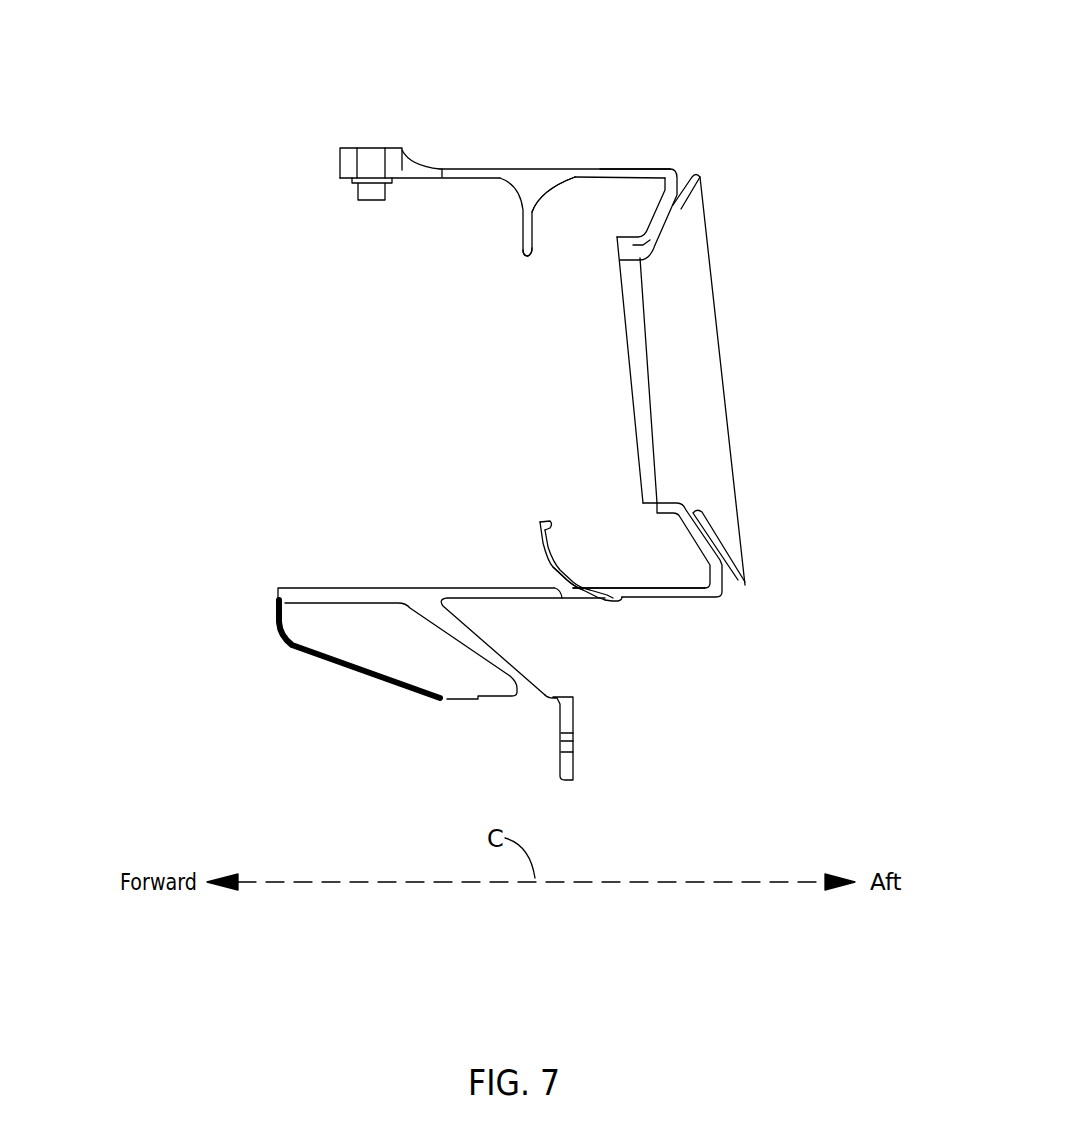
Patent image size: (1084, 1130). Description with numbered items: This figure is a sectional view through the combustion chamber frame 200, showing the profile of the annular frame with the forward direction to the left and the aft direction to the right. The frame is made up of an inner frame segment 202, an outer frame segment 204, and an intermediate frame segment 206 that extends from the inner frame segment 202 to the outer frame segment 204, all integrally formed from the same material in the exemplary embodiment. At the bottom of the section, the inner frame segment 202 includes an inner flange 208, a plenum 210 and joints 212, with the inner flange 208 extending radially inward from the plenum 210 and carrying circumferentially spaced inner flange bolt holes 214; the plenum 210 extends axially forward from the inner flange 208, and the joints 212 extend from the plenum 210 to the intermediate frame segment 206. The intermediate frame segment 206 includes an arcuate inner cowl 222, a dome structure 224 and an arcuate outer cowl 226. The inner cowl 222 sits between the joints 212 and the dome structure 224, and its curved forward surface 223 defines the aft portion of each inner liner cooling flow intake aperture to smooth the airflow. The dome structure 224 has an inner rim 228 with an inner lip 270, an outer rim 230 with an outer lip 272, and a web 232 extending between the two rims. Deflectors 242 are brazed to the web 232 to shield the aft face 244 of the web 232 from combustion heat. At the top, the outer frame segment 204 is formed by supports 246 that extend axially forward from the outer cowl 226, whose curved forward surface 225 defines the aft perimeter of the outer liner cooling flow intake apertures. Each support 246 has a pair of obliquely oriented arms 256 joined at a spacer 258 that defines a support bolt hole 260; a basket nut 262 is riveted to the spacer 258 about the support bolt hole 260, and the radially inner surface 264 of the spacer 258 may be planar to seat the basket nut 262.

The combustion chamber frame 200 is at (283, 53).
The inner frame segment 202 is at (262, 690).
The outer frame segment 204 is at (290, 163).
The intermediate frame segment 206 is at (498, 380).
The inner flange 208 is at (578, 705).
The plenum 210 is at (365, 680).
The joints 212 is at (497, 587).
The inner flange bolt holes 214 is at (580, 752).
The arcuate inner cowl 222 is at (537, 518).
The curved forward surface 223 is at (566, 600).
The dome structure 224 is at (640, 218).
The curved forward surface 225 is at (570, 167).
The arcuate outer cowl 226 is at (528, 258).
The inner rim 228 is at (680, 598).
The outer rim 230 is at (630, 168).
The web 232 is at (664, 203).
The deflectors 242 is at (708, 372).
The aft face 244 is at (700, 212).
The supports 246 is at (448, 161).
The arms 256 is at (486, 177).
The spacer 258 is at (352, 156).
The support bolt hole 260 is at (372, 157).
The basket nut 262 is at (350, 194).
The radially inner surface 264 is at (398, 180).
The inner lip 270 is at (618, 603).
The outer lip 272 is at (540, 173).